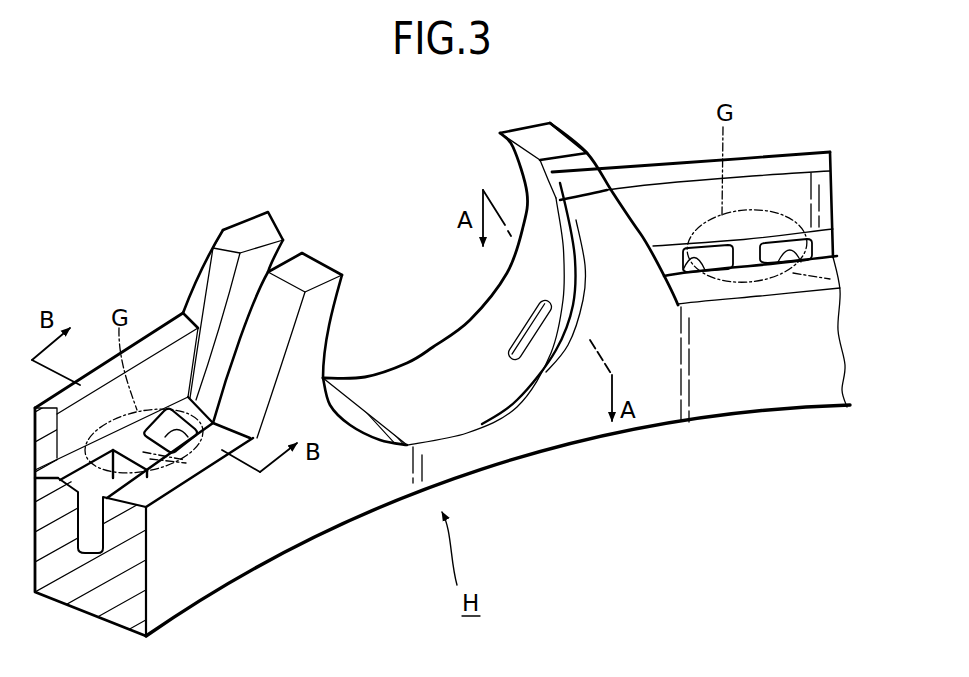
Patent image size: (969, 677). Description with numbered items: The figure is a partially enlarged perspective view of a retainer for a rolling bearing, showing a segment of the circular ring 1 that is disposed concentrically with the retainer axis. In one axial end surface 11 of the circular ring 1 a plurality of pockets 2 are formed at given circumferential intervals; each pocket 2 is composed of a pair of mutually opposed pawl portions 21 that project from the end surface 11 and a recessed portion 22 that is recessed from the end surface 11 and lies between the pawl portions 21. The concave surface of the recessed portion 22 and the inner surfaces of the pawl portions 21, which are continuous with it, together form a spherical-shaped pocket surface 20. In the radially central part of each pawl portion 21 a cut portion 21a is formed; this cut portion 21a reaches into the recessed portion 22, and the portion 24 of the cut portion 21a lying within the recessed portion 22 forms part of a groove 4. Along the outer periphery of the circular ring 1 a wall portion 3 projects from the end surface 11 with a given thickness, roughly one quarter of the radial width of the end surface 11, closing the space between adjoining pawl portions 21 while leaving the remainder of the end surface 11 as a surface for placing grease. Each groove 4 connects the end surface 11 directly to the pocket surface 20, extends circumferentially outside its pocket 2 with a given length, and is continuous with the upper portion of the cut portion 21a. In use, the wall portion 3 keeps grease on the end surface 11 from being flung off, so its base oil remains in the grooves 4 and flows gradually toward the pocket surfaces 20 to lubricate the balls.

The circular ring 1 is at (757, 390).
The pocket 2 is at (425, 265).
The wall portion 3 is at (93, 373).
The groove 4 is at (85, 522).
The end surface 11 is at (826, 265).
The pocket surface 20 is at (399, 361).
The pawl portion 21 is at (238, 228).
The cut portion 21a is at (248, 278).
The recessed portion 22 is at (507, 437).
The portion of the cut portion 24 is at (550, 333).